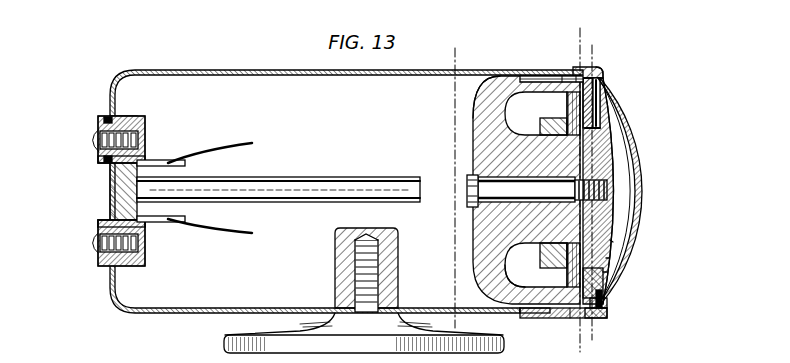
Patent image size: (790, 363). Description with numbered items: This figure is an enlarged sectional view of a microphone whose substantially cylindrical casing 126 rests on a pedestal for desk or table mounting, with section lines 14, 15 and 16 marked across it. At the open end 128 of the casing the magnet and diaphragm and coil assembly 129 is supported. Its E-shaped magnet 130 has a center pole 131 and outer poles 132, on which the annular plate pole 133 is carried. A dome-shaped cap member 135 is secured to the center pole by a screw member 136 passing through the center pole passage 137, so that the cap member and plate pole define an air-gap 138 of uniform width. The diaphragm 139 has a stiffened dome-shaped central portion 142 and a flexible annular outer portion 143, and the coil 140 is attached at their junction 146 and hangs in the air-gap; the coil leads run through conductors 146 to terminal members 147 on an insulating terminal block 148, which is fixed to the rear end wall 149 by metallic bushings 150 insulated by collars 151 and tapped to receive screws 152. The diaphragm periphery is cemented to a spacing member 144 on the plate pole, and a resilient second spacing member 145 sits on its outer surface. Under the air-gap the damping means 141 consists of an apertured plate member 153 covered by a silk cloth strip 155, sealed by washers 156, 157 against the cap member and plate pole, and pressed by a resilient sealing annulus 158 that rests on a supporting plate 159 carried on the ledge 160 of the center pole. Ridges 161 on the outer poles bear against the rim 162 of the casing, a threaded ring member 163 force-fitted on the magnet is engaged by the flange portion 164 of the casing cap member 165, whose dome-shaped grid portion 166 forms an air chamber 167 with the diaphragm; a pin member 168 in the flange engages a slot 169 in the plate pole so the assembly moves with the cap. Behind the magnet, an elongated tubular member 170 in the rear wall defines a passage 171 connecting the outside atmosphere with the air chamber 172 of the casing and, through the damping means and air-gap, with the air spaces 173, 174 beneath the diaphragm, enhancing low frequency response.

The section line 14- 14 is at (594, 53).
The section line 15- 15 is at (583, 37).
The section line 16- 16 is at (458, 62).
The casing 126 is at (180, 309).
The open end 128 is at (522, 318).
The magnet and diaphragm and coil assembly 129 is at (473, 265).
The E-shaped magnet 130 is at (473, 113).
The center pole 131 is at (520, 276).
The outer poles 132 is at (529, 81).
The plate pole 133 is at (604, 285).
The cap member 135 is at (614, 242).
The screw member 136 is at (467, 190).
The center pole passage 137 is at (510, 180).
The air-gap 138 is at (608, 190).
The diaphragm 139 is at (622, 208).
The coil 140 is at (610, 258).
The damping means 141 is at (601, 129).
The central portion 142 is at (636, 150).
The outer portion 143 is at (600, 100).
The spacing member 144 is at (603, 70).
The second spacing member 145 is at (604, 77).
The junction 146 is at (232, 146).
The terminal members 147 is at (160, 160).
The terminal block 148 is at (138, 118).
The rear end wall 149 is at (111, 191).
The metallic bushings 150 is at (104, 163).
The collars 151 is at (114, 116).
The screws 152 is at (100, 138).
The plate member 153 is at (568, 96).
The cloth strip 155 is at (568, 280).
The sealing washer 156 is at (556, 265).
The sealing washer 157 is at (574, 319).
The sealing annulus 158 is at (566, 112).
The supporting plate 159 is at (542, 124).
The ledge 160 is at (512, 268).
The ridges 161 is at (556, 76).
The rim 162 is at (548, 76).
The threaded ring member 163 is at (577, 76).
The flange portion 164 is at (556, 79).
The casing cap member 165 is at (607, 316).
The grid portion 166 is at (607, 272).
The air chamber 167 is at (629, 169).
The pin member 168 is at (607, 310).
The slot 169 is at (603, 296).
The tubular member 170 is at (300, 178).
The passage 171 is at (282, 193).
The air chamber 172 is at (318, 125).
The air space 173 is at (619, 226).
The air space 174 is at (599, 110).